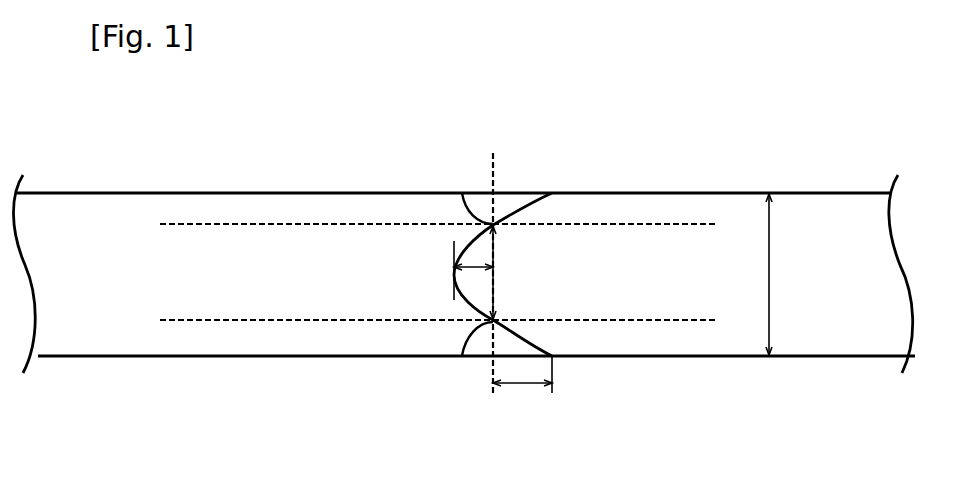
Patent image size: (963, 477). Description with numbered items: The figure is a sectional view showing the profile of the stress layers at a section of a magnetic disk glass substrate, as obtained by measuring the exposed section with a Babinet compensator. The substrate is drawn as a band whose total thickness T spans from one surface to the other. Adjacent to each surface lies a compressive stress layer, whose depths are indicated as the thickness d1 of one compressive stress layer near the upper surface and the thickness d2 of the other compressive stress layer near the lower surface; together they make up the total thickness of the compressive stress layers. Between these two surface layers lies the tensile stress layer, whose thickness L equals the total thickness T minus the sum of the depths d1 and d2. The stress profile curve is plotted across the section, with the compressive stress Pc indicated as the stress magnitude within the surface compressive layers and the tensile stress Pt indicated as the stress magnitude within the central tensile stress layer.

The thickness of compressive stress layer d1 is at (463, 194).
The thickness of compressive stress layer d2 is at (462, 357).
The tensile stress Pt is at (458, 287).
The thickness of tensile stress layer L is at (496, 256).
The thickness of magnetic disk glass substrate T is at (779, 274).
The compressive stress Pc is at (523, 384).